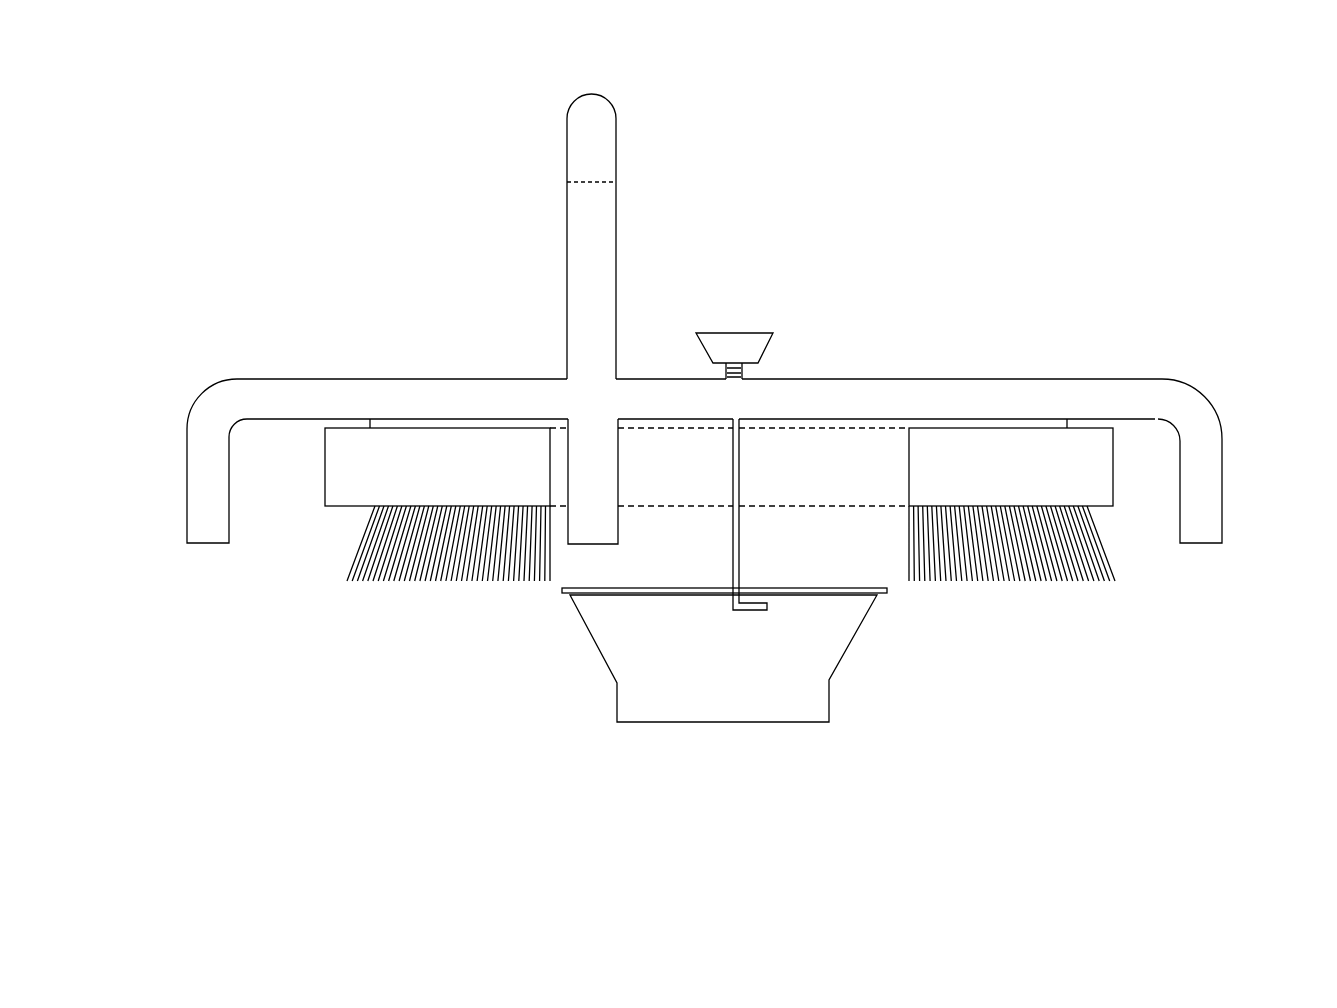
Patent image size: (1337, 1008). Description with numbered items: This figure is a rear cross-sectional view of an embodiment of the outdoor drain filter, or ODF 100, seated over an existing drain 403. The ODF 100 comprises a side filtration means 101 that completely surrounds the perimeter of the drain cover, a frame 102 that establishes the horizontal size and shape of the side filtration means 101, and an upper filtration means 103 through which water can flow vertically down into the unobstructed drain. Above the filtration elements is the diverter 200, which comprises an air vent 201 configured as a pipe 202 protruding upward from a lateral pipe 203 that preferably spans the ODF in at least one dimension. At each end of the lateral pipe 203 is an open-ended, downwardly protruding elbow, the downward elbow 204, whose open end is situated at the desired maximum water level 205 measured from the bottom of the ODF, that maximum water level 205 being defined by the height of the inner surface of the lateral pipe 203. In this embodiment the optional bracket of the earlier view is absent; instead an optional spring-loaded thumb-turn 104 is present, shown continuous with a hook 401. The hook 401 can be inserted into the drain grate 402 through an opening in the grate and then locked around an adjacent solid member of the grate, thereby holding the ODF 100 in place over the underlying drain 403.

The ODF 100 is at (962, 68).
The side filtration means 101 is at (355, 548).
The frame 102 is at (323, 461).
The upper filtration means 103 is at (485, 418).
The spring-loaded thumb-turn 104 is at (749, 328).
The diverter 200 is at (672, 222).
The air vent 201 is at (565, 186).
The pipe 202 is at (620, 285).
The lateral pipe 203 is at (357, 376).
The downward elbow 204 is at (184, 483).
The maximum water level 205 is at (280, 416).
The hook 401 is at (744, 543).
The drain grate 402 is at (559, 596).
The drain 403 is at (857, 637).